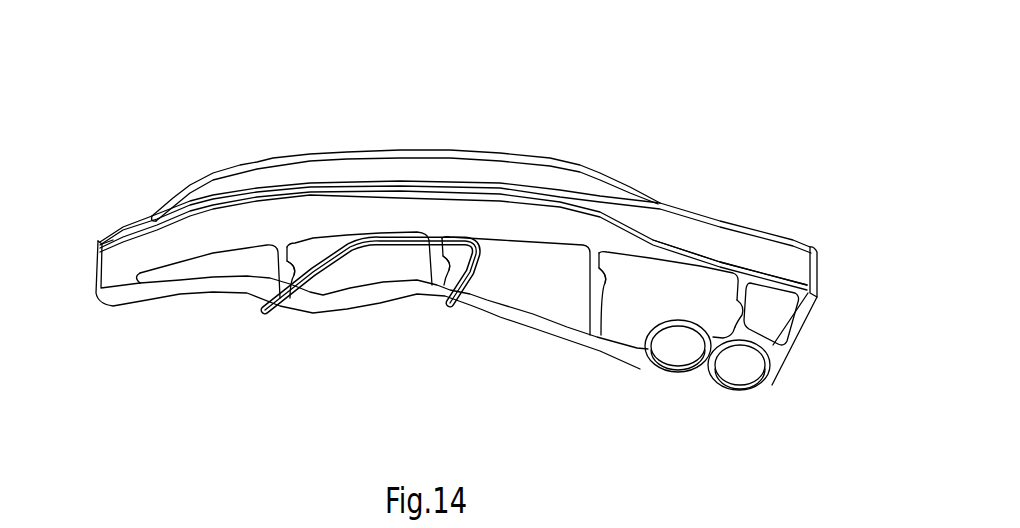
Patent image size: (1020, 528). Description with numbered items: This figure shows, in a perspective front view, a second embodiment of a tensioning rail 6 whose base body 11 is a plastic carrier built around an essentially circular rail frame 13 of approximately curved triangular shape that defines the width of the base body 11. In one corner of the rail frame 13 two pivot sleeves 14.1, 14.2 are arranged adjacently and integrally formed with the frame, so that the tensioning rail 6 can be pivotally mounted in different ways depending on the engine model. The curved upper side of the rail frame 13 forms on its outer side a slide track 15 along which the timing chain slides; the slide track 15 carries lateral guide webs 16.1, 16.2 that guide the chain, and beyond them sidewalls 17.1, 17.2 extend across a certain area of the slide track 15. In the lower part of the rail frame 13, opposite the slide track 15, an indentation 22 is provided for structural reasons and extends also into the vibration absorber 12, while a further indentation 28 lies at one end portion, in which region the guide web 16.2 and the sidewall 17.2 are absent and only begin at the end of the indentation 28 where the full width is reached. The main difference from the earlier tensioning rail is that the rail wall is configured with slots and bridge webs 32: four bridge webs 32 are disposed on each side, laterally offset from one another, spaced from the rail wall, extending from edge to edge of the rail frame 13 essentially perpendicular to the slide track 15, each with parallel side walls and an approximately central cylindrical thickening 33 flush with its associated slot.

The tensioning rail 6 is at (160, 313).
The base body 11 is at (677, 177).
The vibration absorber 12 is at (233, 275).
The rail frame 13 is at (742, 233).
The pivot sleeve 14.1 is at (677, 355).
The pivot sleeve 14.2 is at (733, 375).
The slide track 15 is at (722, 262).
The guide web 16.1 is at (716, 242).
The guide web 16.2 is at (800, 281).
The sidewall 17.1 is at (372, 148).
The sidewall 17.2 is at (447, 190).
The indentation 22 is at (381, 265).
The indentation 28 is at (803, 241).
The bridge web 32 is at (293, 253).
The cylindrical thickening 33 is at (281, 272).